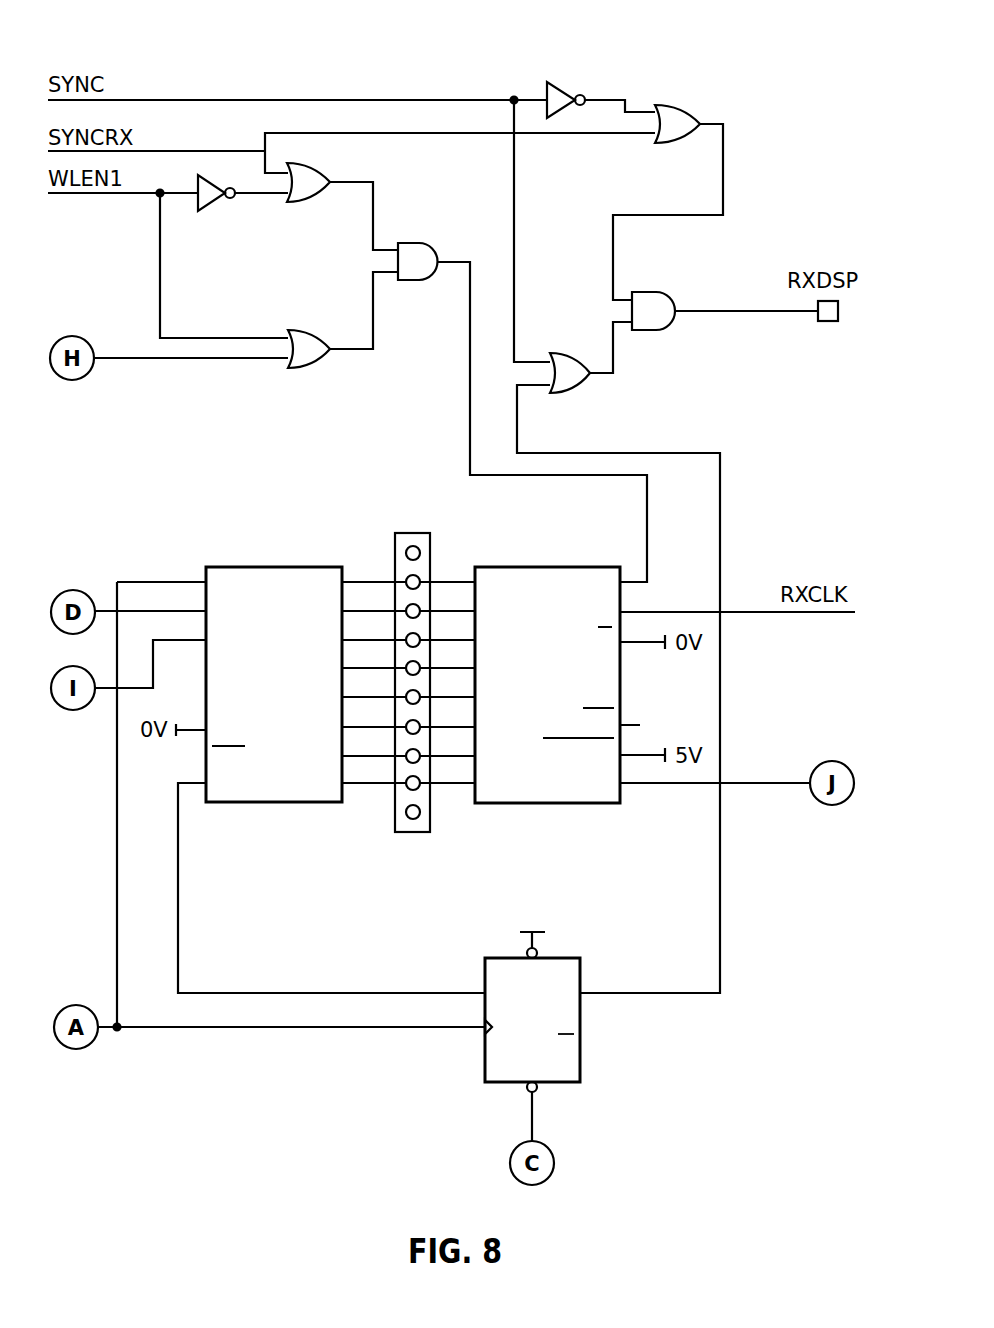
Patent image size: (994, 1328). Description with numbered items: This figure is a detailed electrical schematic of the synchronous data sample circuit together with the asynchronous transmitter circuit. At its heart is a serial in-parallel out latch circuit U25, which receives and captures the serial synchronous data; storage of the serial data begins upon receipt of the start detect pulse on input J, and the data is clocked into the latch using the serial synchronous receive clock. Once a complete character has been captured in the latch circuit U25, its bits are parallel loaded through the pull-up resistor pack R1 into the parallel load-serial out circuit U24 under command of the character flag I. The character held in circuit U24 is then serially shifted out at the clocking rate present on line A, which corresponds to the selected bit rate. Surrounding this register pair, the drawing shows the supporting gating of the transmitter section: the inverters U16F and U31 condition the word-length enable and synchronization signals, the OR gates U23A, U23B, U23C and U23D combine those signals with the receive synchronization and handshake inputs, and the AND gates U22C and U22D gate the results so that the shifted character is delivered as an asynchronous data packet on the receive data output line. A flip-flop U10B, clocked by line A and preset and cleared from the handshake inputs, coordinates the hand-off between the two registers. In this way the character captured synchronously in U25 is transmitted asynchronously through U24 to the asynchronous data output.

The hex inverter 74LS04 (SYNC inverter) U31 is at (585, 67).
The OR gate 74HCT32 U23C is at (702, 192).
The AND gate 74HCT08 (RXDSP output) U22D is at (734, 315).
The OR gate 74HCT32 U23D is at (618, 657).
The hex inverter 74LS04 (WLEN1 inverter) U16F is at (233, 224).
The OR gate 74HCT32 U23A is at (359, 197).
The AND gate 74HCT08 U22C is at (516, 398).
The OR gate 74HCT32 U23B is at (330, 337).
The parallel load-serial out circuit U24 is at (274, 688).
The 10K SIP resistor pack R1 is at (407, 685).
The serial in-parallel out latch circuit U25 is at (547, 689).
The D flip-flop 74HCT74 U10B is at (587, 1022).